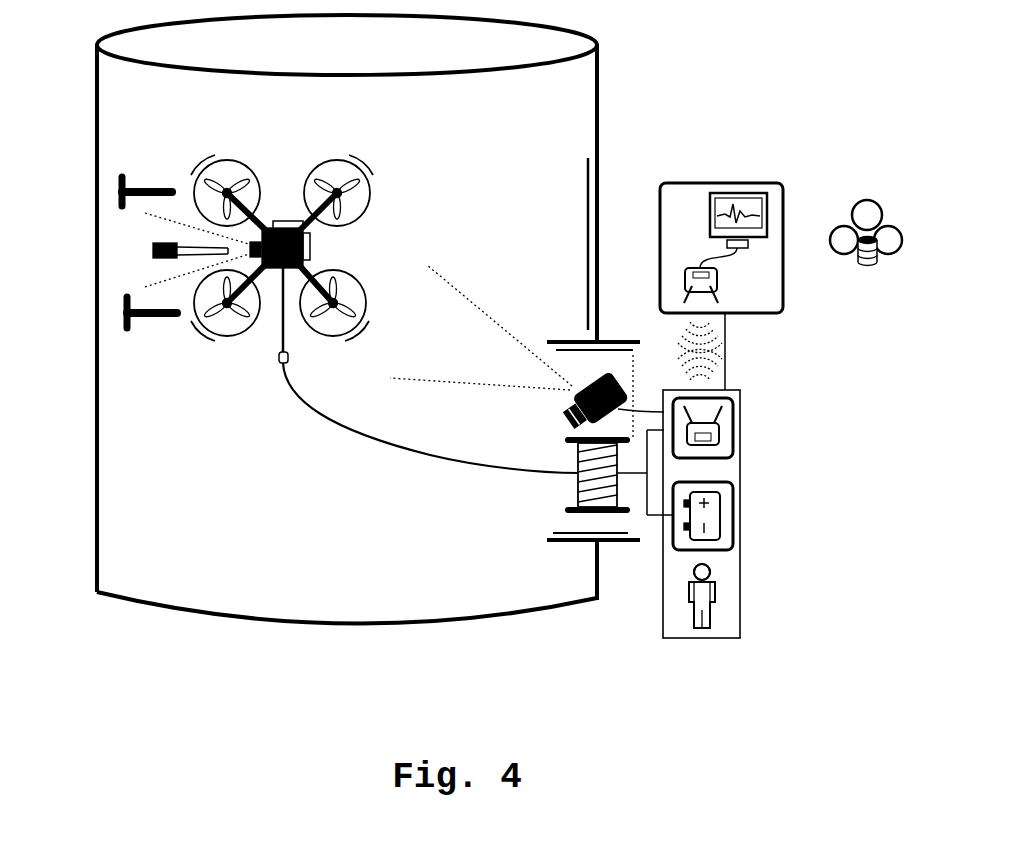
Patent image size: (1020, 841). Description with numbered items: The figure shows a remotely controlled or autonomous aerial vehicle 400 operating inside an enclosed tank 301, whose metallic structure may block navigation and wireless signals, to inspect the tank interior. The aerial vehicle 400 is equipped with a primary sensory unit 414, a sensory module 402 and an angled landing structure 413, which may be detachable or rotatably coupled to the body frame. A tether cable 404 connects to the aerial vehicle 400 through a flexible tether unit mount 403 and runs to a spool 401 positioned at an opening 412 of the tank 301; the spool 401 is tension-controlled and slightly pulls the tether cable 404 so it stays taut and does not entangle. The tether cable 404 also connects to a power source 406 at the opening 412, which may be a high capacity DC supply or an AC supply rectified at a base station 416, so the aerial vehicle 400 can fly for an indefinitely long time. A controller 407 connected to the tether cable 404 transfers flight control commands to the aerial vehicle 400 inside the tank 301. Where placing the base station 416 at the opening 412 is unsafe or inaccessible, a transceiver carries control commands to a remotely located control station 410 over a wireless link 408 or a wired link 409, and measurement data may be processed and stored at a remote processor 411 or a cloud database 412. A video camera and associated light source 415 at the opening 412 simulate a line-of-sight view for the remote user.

The tank 301 is at (613, 88).
The aerial vehicle 400 is at (380, 253).
The spool 401 is at (560, 497).
The sensory module 402 is at (282, 213).
The tether unit mount 403 is at (268, 350).
The tether cable 404 is at (365, 450).
The power source 406 is at (745, 517).
The controller 407 is at (745, 430).
The wireless link 408 is at (680, 345).
The wired link 409 is at (735, 333).
The control station 410 is at (793, 205).
The remote processor 411 is at (725, 190).
The opening 412 is at (165, 330).
The angled landing structure 413 is at (137, 250).
The primary sensory unit 414 is at (137, 217).
The video camera and associated light source 415 is at (565, 395).
The base station 416 is at (657, 590).